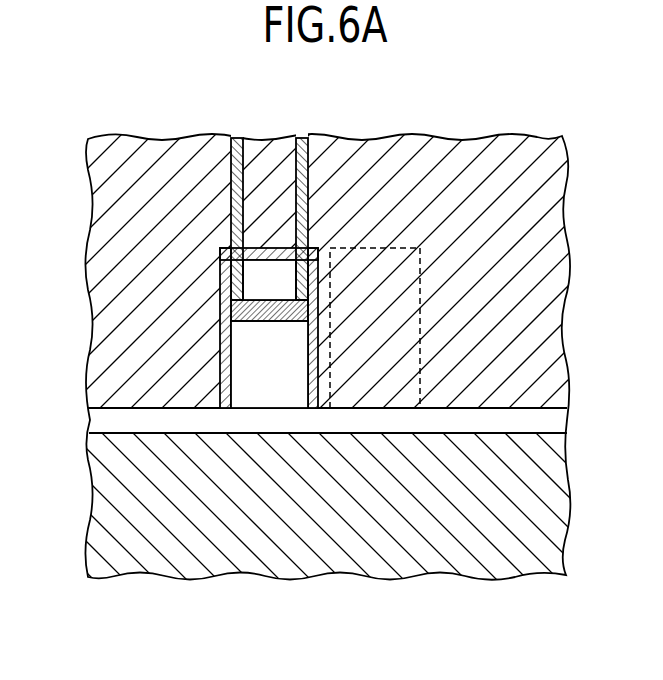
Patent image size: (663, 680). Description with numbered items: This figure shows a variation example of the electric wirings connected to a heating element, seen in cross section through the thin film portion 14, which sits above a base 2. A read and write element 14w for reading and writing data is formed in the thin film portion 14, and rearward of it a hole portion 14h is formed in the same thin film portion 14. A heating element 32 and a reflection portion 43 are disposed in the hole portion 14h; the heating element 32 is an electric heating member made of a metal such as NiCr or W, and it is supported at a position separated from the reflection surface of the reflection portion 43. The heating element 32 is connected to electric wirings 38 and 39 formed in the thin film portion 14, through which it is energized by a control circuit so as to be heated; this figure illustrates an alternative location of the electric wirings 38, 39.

The thin film portion 14 is at (147, 163).
The base plate / substrate 2 is at (140, 552).
The reflection portion 43 is at (220, 359).
The hole portion 14h is at (250, 367).
The heating element 32 is at (270, 310).
The electric wiring 39 is at (236, 139).
The electric wiring 38 is at (302, 139).
The read and write element 14w is at (376, 248).